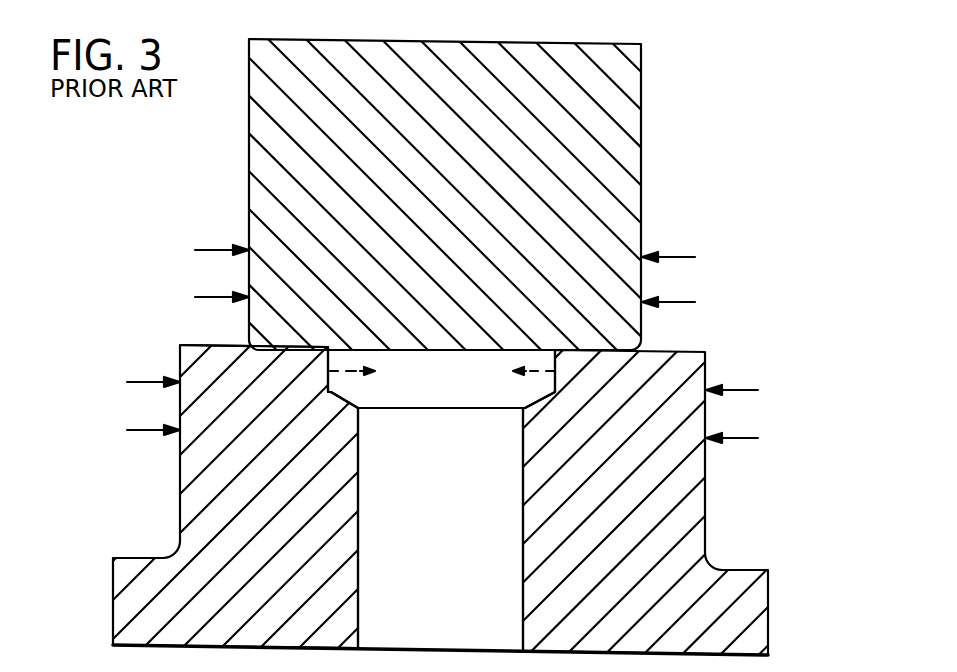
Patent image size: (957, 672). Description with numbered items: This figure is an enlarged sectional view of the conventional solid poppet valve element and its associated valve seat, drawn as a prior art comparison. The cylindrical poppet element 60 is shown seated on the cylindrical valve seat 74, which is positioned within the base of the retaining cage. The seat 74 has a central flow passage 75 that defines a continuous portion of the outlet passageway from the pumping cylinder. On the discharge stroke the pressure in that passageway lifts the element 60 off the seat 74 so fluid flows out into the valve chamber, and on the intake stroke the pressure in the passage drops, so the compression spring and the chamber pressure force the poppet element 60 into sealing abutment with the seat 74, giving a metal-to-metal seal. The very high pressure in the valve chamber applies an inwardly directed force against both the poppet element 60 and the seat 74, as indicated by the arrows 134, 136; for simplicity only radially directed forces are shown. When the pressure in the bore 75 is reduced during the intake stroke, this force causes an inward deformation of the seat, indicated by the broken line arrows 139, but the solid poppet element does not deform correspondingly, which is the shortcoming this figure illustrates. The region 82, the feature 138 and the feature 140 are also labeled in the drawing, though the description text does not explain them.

The poppet element 60 is at (268, 176).
The valve seat 74 is at (192, 494).
The flow passage 75 is at (455, 570).
The seal pocket 82 is at (413, 378).
The arrows 134 is at (202, 250).
The arrows 136 is at (140, 381).
The clearance gap 138 is at (438, 350).
The broken line arrows 139 is at (535, 373).
The top surface of body 140 is at (213, 345).